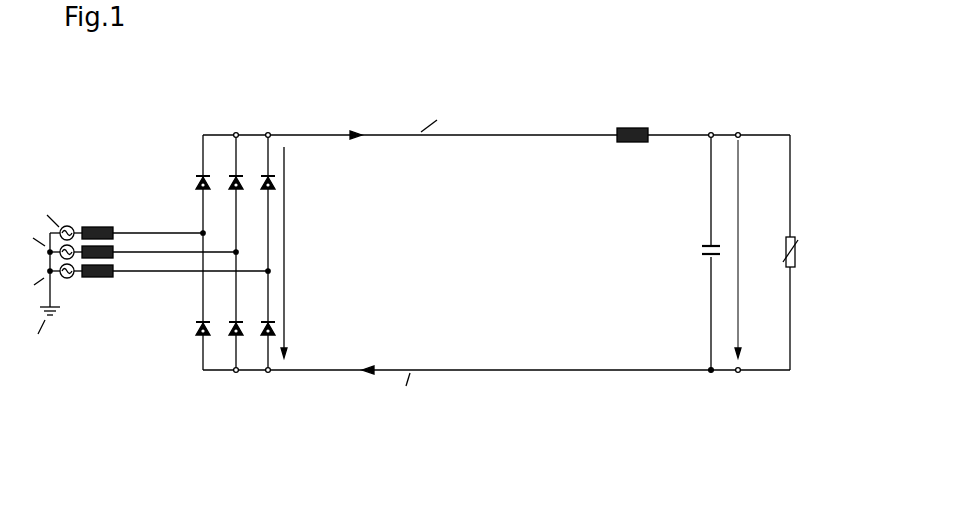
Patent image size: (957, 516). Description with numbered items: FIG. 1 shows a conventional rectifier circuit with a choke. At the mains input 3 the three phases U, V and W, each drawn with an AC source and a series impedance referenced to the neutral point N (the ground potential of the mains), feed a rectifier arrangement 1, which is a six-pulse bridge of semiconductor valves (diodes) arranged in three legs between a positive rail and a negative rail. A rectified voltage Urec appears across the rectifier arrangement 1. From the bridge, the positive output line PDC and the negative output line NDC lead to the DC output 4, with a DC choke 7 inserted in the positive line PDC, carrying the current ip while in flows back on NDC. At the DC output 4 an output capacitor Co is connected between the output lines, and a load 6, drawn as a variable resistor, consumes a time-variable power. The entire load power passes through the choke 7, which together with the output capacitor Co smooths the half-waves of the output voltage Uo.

The rectifier arrangement 1 is at (270, 118).
The mains input 3 is at (200, 390).
The DC output 4 is at (783, 425).
The load 6 is at (786, 246).
The DC choke 7 is at (640, 126).